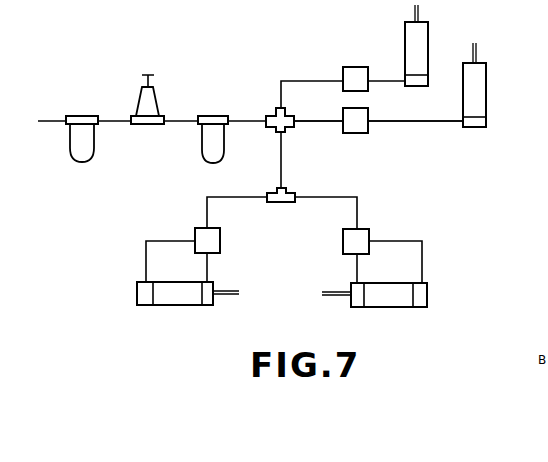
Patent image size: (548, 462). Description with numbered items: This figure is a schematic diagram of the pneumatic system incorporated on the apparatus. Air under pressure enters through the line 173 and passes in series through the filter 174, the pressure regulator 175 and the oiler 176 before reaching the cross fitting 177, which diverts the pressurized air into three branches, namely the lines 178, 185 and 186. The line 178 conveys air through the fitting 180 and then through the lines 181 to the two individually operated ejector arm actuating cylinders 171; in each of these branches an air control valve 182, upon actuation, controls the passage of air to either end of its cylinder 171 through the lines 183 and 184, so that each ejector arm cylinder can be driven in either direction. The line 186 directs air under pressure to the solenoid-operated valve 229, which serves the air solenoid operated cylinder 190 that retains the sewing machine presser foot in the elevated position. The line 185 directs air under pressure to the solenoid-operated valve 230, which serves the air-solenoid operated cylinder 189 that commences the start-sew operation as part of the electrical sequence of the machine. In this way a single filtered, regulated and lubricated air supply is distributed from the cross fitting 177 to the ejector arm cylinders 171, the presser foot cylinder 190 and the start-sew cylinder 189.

The ejector arm actuating cylinder 171 is at (163, 307).
The line 173 is at (40, 118).
The filter 174 is at (94, 147).
The pressure regulator 175 is at (158, 95).
The oiler 176 is at (202, 151).
The cross fitting 177 is at (277, 108).
The line 178 is at (279, 162).
The fitting 180 is at (280, 202).
The line 181 is at (207, 210).
The air control valve 182 is at (220, 243).
The line 183 is at (207, 270).
The line 184 is at (146, 268).
The line 185 is at (306, 80).
The line 186 is at (315, 126).
The air-solenoid operated cylinder 189 is at (427, 33).
The air solenoid operated cylinder 190 is at (487, 106).
The solenoid-operated valve 229 is at (360, 133).
The solenoid-operated valve 230 is at (354, 66).